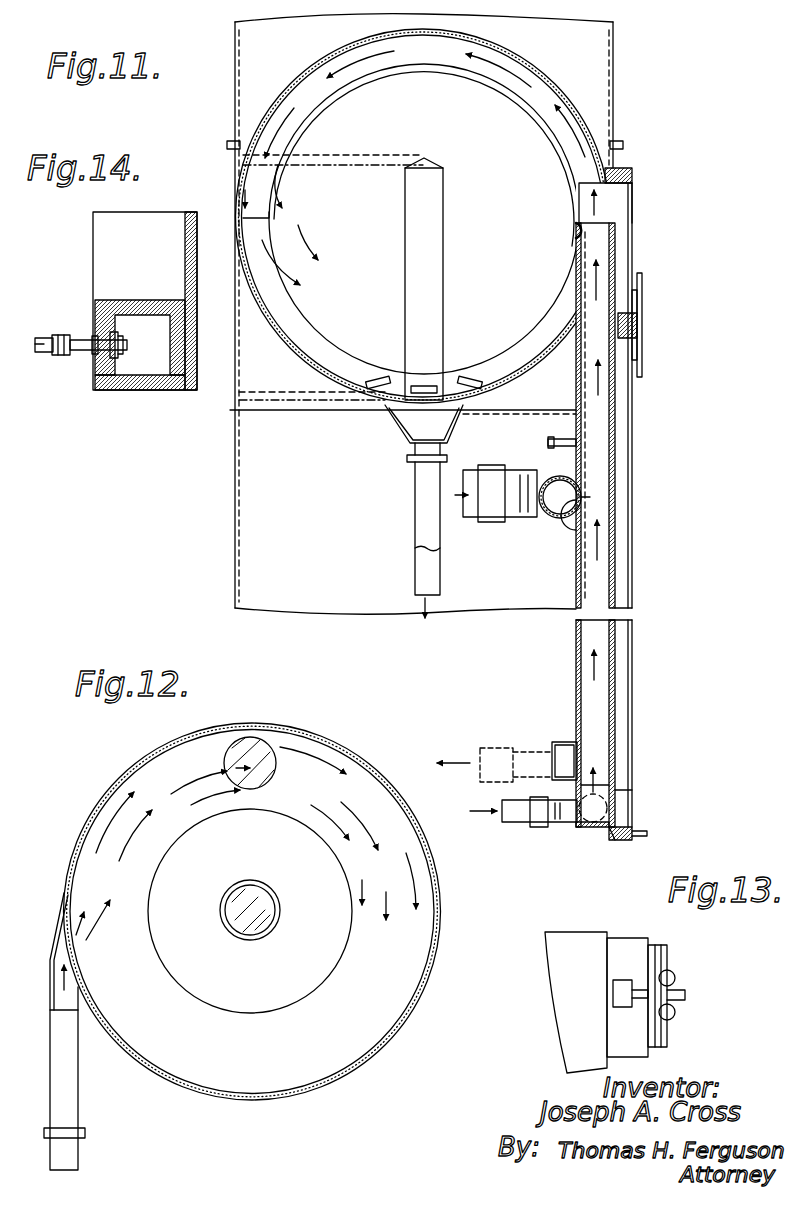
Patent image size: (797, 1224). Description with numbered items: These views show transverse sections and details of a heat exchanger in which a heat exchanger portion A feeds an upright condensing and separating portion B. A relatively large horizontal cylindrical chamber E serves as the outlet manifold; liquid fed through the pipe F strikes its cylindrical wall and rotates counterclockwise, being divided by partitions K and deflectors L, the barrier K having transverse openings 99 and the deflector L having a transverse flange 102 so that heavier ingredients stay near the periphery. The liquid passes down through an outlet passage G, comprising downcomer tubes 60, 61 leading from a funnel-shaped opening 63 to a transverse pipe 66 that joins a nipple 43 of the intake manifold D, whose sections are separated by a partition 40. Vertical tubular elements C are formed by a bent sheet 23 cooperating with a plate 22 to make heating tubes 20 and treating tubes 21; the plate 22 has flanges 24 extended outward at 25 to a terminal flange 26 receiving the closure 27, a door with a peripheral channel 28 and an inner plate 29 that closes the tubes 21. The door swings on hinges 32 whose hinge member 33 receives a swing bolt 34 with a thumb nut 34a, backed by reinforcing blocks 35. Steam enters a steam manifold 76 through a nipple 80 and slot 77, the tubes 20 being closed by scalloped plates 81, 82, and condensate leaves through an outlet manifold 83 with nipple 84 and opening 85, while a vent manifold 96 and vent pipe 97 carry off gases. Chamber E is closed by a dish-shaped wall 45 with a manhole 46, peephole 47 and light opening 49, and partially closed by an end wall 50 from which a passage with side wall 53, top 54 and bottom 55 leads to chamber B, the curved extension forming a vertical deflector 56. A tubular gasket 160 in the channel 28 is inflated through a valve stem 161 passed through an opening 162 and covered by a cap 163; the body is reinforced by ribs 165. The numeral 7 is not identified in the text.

In FIG. 11, the heat exchanger portion A is at (292, 88).
In FIG. 12, the heat exchanger portion A is at (425, 850).
In FIG. 11, the condensing and separating portion B is at (235, 98).
In FIG. 11, the horizontal cylindrical chamber E is at (520, 112).
In FIG. 12, the horizontal cylindrical chamber E is at (345, 770).
In FIG. 11, the deflector L is at (355, 72).
In FIG. 11, the partition K is at (330, 356).
In FIG. 11, the outlet passage G is at (410, 493).
In FIG. 11, the tubular element C is at (622, 572).
In FIG. 11, the intake manifold D is at (604, 826).
In FIG. 12, the feed pipe F is at (52, 1068).
In FIG. 11, the partition plate 7 is at (266, 392).
In FIG. 11, the heating tube 20 is at (578, 540).
In FIG. 11, the treating tube 21 is at (598, 445).
In FIG. 11, the plate 22 is at (576, 690).
In FIG. 11, the bent sheet 23 is at (608, 472).
In FIG. 11, the flange 24 is at (590, 826).
In FIG. 13, the flange 24 is at (585, 945).
In FIG. 11, the outward extension 25 is at (608, 830).
In FIG. 14, the outward extension 25 is at (185, 322).
In FIG. 11, the terminal flange 26 is at (625, 842).
In FIG. 14, the terminal flange 26 is at (140, 392).
In FIG. 13, the terminal flange 26 is at (630, 950).
In FIG. 11, the closure 27 is at (622, 805).
In FIG. 14, the closure 27 is at (110, 262).
In FIG. 11, the peripheral channel 28 is at (636, 190).
In FIG. 14, the peripheral channel 28 is at (133, 288).
In FIG. 11, the plate 29 is at (618, 512).
In FIG. 14, the plate 29 is at (188, 280).
In FIG. 11, the hinge 32 is at (640, 314).
In FIG. 11, the hinge member 33 is at (640, 340).
In FIG. 13, the swing bolt 34 is at (676, 982).
In FIG. 13, the thumb nut 34a is at (676, 1014).
In FIG. 11, the reinforcing block 35 is at (638, 328).
In FIG. 11, the partition 40 is at (632, 795).
In FIG. 11, the nipple 43 is at (560, 798).
In FIG. 12, the dish-shaped wall 45 is at (405, 918).
In FIG. 12, the manhole 46 is at (328, 940).
In FIG. 12, the peephole 47 is at (260, 904).
In FIG. 12, the opening 49 is at (258, 752).
In FIG. 11, the dish-shaped end wall 50 is at (540, 130).
In FIG. 11, the side wall 53 is at (443, 273).
In FIG. 11, the top 54 is at (424, 160).
In FIG. 11, the bottom 55 is at (398, 425).
In FIG. 11, the vertical deflector 56 is at (405, 290).
In FIG. 11, the downcomer tube 60 is at (415, 520).
In FIG. 11, the downcomer tube 61 is at (415, 574).
In FIG. 11, the funnel-shaped opening 63 is at (452, 425).
In FIG. 11, the transverse pipe 66 is at (520, 822).
In FIG. 11, the steam manifold 76 is at (555, 535).
In FIG. 11, the slot 77 is at (584, 508).
In FIG. 11, the nipple 80 is at (528, 515).
In FIG. 11, the scalloped plate 81 is at (612, 222).
In FIG. 11, the scalloped plate 82 is at (605, 785).
In FIG. 11, the outlet manifold 83 is at (555, 742).
In FIG. 11, the nipple 84 is at (528, 758).
In FIG. 11, the opening 85 is at (590, 790).
In FIG. 11, the vent manifold 96 is at (572, 235).
In FIG. 11, the vent pipe 97 is at (549, 451).
In FIG. 11, the transverse opening 99 is at (466, 381).
In FIG. 11, the transverse flange 102 is at (298, 115).
In FIG. 14, the tubular gasket 160 is at (112, 385).
In FIG. 14, the valve stem 161 is at (108, 338).
In FIG. 14, the opening 162 is at (88, 358).
In FIG. 14, the cap 163 is at (60, 333).
In FIG. 11, the rib 165 is at (227, 145).